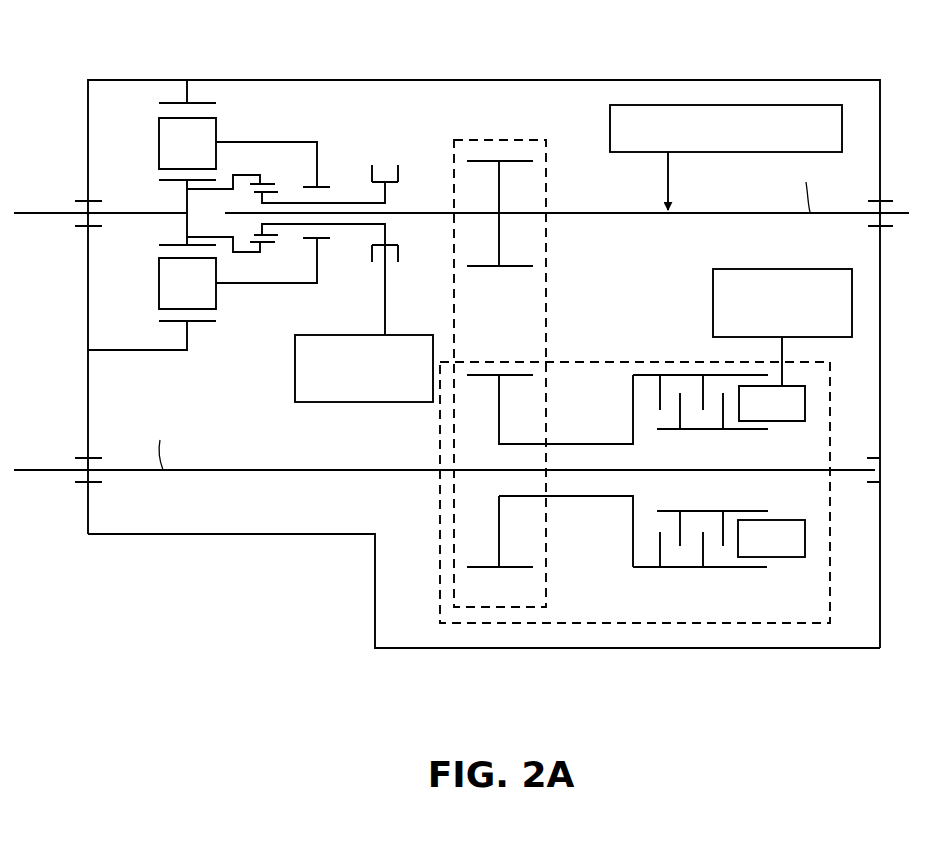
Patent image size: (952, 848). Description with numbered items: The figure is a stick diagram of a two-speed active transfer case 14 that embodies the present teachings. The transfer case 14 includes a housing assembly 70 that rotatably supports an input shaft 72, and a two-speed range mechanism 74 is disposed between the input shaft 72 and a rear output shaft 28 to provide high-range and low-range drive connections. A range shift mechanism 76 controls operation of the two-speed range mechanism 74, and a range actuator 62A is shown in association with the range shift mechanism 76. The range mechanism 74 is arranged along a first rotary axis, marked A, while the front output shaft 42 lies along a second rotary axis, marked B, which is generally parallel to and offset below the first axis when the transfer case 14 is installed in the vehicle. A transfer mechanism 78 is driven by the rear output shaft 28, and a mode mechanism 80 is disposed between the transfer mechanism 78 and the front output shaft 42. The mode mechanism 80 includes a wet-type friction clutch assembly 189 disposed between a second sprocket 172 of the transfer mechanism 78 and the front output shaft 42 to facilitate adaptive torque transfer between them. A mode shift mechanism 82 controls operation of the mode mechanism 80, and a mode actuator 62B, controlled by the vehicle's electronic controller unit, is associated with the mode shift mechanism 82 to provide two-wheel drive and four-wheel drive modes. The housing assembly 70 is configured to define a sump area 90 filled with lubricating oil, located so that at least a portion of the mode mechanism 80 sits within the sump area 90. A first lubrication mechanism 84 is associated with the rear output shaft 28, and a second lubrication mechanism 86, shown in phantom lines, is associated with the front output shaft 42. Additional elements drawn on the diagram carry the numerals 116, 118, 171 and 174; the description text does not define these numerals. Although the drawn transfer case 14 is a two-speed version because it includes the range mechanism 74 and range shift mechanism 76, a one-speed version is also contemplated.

The transfer case 14 is at (210, 572).
The rear output shaft 28 is at (612, 210).
The front output shaft 42 is at (52, 468).
The range actuator 62A is at (332, 405).
The mode actuator 62B is at (713, 290).
The housing assembly 70 is at (603, 80).
The input shaft 72 is at (52, 208).
The two-speed range mechanism 74 is at (250, 120).
The range shift mechanism 76 is at (278, 318).
The transfer mechanism 78 is at (433, 170).
The mode mechanism 80 is at (664, 607).
The mode shift mechanism 82 is at (860, 363).
The first lubrication mechanism 84 is at (715, 105).
The second lubrication mechanism 86 is at (767, 610).
The sump area 90 is at (402, 617).
The range gear 116 is at (137, 255).
The range shift collar 118 is at (352, 160).
The clutch hub 171 is at (513, 161).
The second sprocket 172 is at (532, 572).
The upper clutch member 174 is at (453, 502).
The friction clutch assembly 189 is at (690, 547).